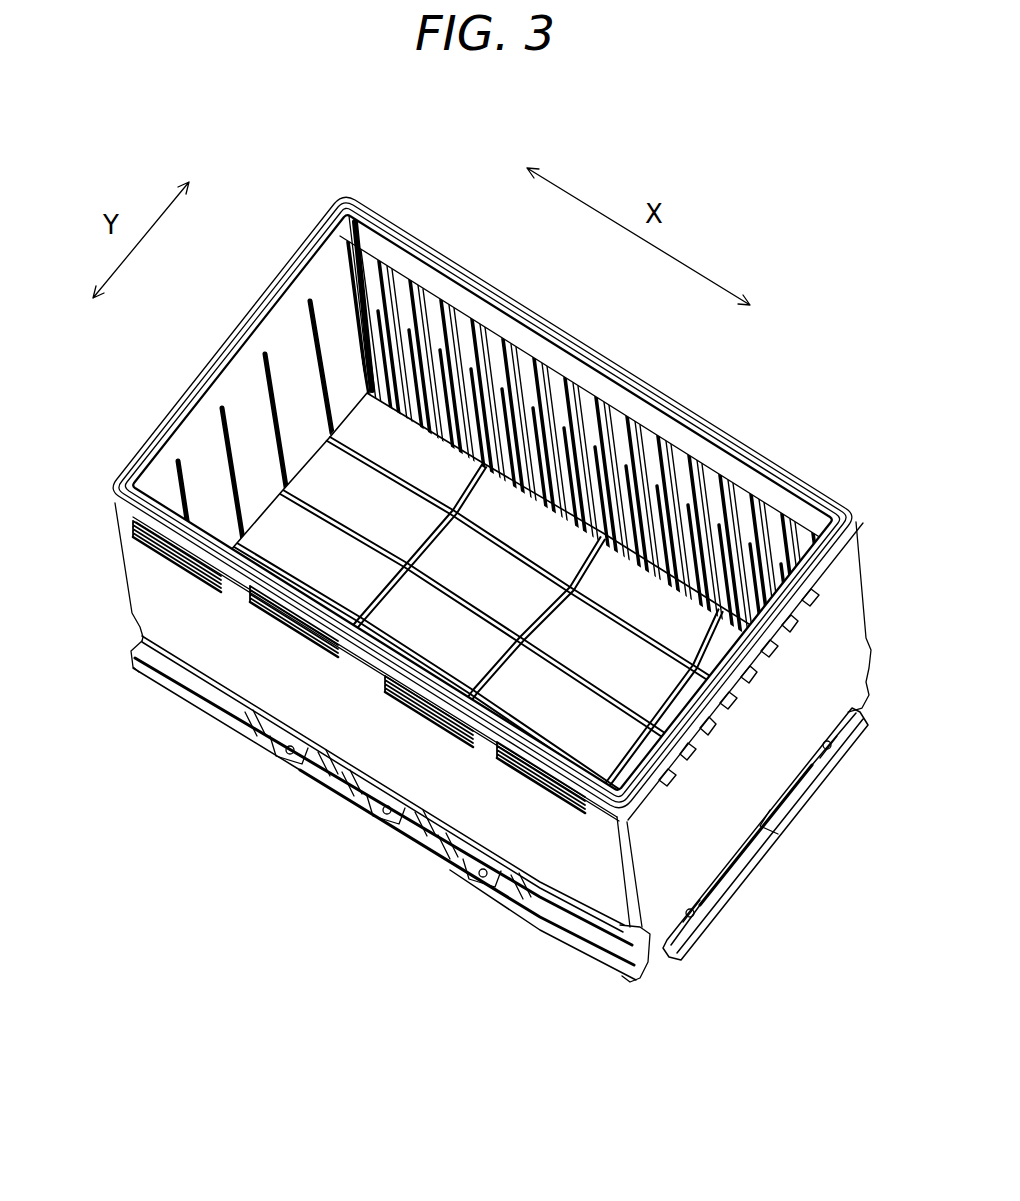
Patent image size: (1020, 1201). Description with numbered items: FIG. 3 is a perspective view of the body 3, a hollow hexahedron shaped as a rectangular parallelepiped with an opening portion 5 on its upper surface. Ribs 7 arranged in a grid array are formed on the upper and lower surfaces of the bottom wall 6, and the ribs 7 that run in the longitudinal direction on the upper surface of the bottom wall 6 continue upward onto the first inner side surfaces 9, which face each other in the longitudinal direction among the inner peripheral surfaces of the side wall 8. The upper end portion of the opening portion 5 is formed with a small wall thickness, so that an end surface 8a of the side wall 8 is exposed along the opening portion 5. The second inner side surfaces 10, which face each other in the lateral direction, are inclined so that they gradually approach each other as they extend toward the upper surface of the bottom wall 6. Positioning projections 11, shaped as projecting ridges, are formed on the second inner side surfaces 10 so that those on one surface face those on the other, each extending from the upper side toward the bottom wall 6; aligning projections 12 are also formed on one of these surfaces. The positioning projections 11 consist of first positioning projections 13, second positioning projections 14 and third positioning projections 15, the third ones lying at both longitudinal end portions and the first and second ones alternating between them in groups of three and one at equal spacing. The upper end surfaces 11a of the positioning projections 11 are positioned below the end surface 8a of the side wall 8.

The body 3 is at (791, 439).
The opening portion 5 is at (312, 226).
The bottom wall 6 is at (383, 523).
The ribs 7 is at (313, 350).
The side wall 8 is at (147, 580).
The end surface 8a is at (796, 494).
The first inner side surfaces 9 is at (203, 482).
The second inner side surfaces 10 is at (700, 443).
The positioning projections 11 is at (531, 220).
The upper end surfaces 11a is at (605, 470).
The aligning projections 12 is at (582, 452).
The first positioning projections 13 is at (407, 270).
The second positioning projection 14 is at (467, 320).
The third positioning projections 15 is at (364, 232).